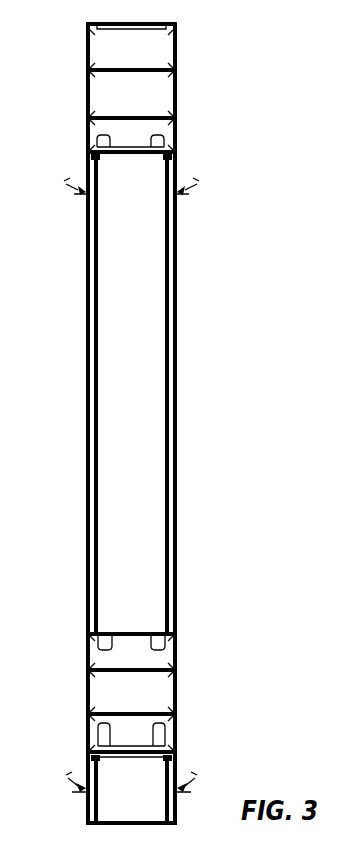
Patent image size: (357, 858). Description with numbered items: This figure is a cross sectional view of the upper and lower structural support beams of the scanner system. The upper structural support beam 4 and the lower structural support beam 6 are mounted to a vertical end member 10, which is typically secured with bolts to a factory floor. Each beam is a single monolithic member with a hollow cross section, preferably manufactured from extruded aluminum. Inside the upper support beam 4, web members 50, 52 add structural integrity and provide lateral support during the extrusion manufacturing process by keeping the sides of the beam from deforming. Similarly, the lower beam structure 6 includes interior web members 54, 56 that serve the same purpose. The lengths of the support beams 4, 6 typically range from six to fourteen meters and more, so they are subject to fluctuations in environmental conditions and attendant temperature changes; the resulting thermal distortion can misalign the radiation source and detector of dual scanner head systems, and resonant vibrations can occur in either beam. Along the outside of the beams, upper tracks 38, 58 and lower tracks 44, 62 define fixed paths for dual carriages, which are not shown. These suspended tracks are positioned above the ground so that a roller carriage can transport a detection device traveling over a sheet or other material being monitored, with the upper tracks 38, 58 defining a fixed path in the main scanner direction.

The upper structural support beam 4 is at (150, 92).
The lower structural support beam 6 is at (149, 728).
The vertical end member 10 is at (85, 425).
The upper track 38 is at (198, 184).
The lower track 44 is at (195, 778).
The web member 50 is at (112, 68).
The web member 52 is at (112, 116).
The interior web member 54 is at (108, 669).
The interior web member 56 is at (108, 712).
The upper track 58 is at (66, 184).
The lower track 62 is at (68, 778).